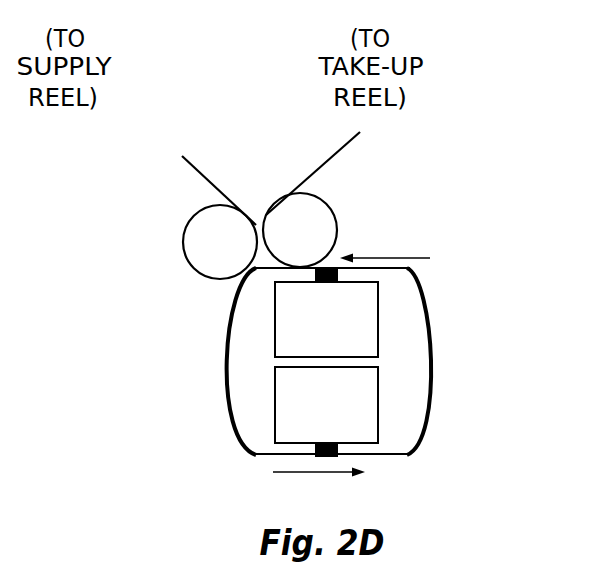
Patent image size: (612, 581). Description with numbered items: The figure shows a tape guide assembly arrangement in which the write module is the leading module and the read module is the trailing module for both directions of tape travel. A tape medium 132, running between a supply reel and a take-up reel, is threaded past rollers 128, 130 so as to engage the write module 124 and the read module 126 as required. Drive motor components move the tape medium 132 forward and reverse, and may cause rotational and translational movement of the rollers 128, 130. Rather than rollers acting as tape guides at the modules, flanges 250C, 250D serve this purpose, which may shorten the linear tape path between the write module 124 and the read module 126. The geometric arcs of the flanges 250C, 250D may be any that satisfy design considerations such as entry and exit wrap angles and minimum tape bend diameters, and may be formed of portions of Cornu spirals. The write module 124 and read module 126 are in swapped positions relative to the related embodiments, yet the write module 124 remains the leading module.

The write module 124 is at (376, 439).
The read module 126 is at (376, 352).
The roller 128 is at (183, 241).
The roller 130 is at (331, 204).
The tape medium 132 is at (193, 165).
The flange 250C is at (227, 383).
The flange 250D is at (428, 363).